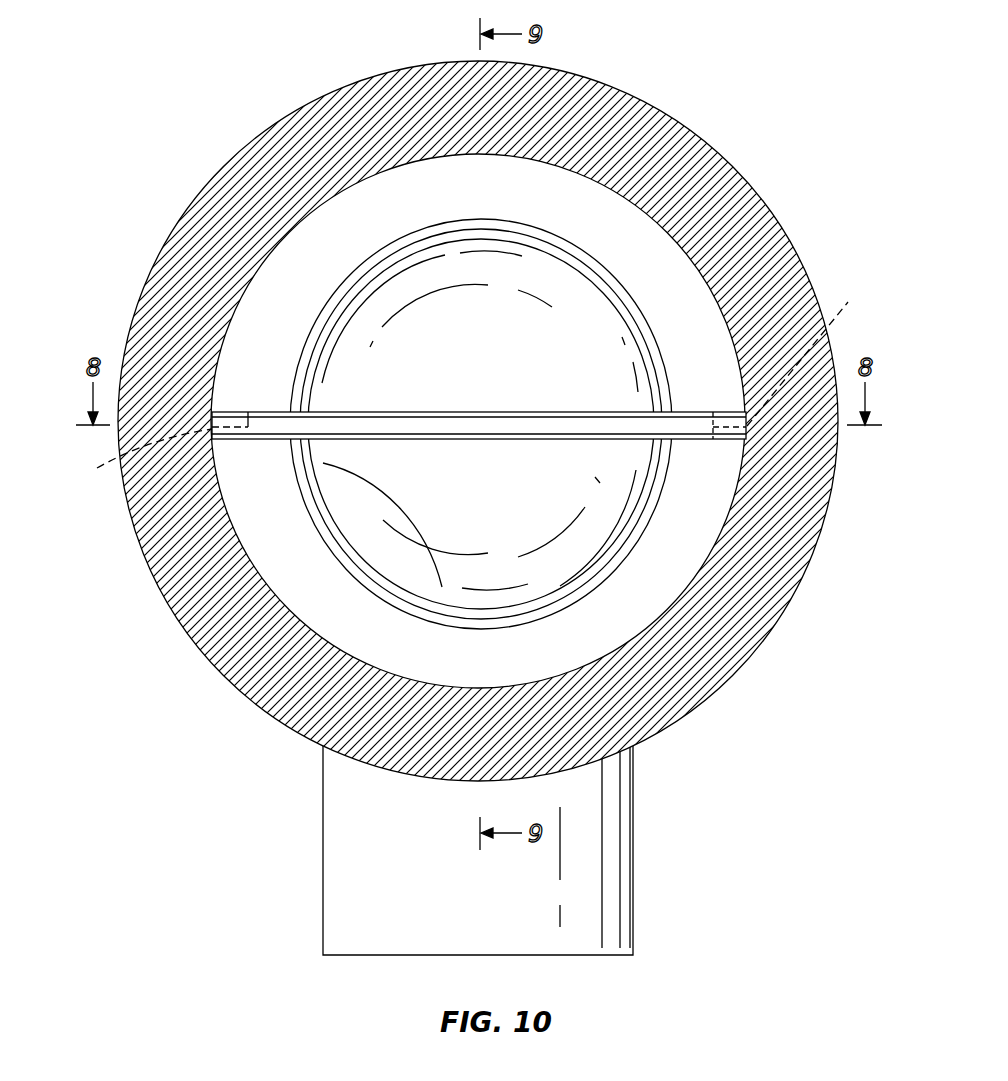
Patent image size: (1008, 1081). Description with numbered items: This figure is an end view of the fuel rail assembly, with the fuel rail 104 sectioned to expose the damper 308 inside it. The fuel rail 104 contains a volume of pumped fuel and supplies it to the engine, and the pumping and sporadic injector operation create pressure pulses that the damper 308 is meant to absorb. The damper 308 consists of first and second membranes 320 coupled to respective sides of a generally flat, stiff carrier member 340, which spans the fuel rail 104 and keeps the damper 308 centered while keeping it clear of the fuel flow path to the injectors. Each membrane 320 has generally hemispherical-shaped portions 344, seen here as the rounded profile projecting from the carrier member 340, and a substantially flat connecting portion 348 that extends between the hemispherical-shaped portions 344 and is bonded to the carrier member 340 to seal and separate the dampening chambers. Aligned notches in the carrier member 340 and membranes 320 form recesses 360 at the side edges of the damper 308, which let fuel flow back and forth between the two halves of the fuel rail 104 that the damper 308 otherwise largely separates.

The fuel rail 104 is at (252, 152).
The damper 308 is at (386, 333).
The membrane 320 is at (303, 437).
The carrier member 340 is at (257, 427).
The hemispherical-shaped portion 344 is at (343, 278).
The connecting portion 348 is at (678, 416).
The recess 360 is at (468, 382).